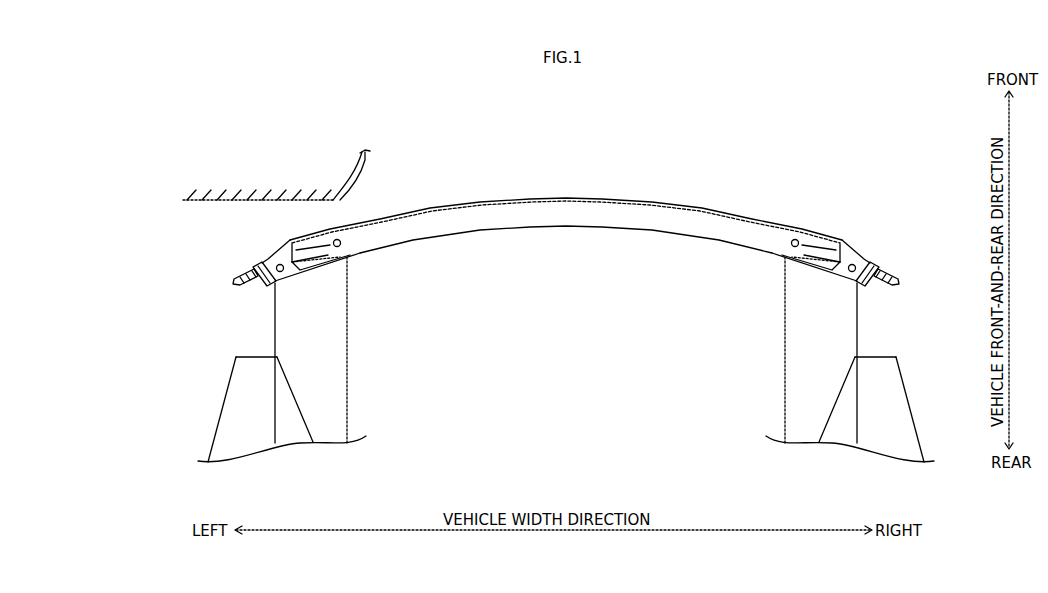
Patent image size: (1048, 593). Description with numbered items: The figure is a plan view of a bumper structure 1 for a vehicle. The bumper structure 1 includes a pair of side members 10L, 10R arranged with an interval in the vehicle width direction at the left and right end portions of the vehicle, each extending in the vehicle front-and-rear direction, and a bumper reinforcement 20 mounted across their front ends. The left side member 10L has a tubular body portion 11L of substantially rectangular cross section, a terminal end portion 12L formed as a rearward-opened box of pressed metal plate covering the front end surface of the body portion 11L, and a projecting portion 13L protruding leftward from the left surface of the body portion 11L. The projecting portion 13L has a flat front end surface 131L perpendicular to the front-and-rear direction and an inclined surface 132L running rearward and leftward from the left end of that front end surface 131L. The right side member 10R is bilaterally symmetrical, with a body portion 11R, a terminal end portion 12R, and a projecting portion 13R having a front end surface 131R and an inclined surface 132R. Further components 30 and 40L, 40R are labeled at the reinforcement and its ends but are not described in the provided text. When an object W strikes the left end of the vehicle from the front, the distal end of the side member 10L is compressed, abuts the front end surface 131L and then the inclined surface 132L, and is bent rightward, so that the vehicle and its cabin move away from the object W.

The bumper structure 1 is at (606, 136).
The object W is at (368, 155).
The bumper reinforcement 20 is at (623, 199).
The bumper beam front surface 30 is at (571, 199).
The side member 10L is at (349, 322).
The side member 10R is at (783, 330).
The body portion 11L is at (348, 371).
The body portion 11R is at (784, 371).
The terminal end portion 12L is at (323, 261).
The terminal end portion 12R is at (809, 261).
The projecting portion 13L is at (240, 391).
The projecting portion 13R is at (892, 391).
The front end surface 131L is at (258, 356).
The front end surface 131R is at (882, 356).
The inclined surface 132L is at (232, 367).
The inclined surface 132R is at (898, 365).
The left sensor unit 40L is at (256, 270).
The right sensor unit 40R is at (874, 268).